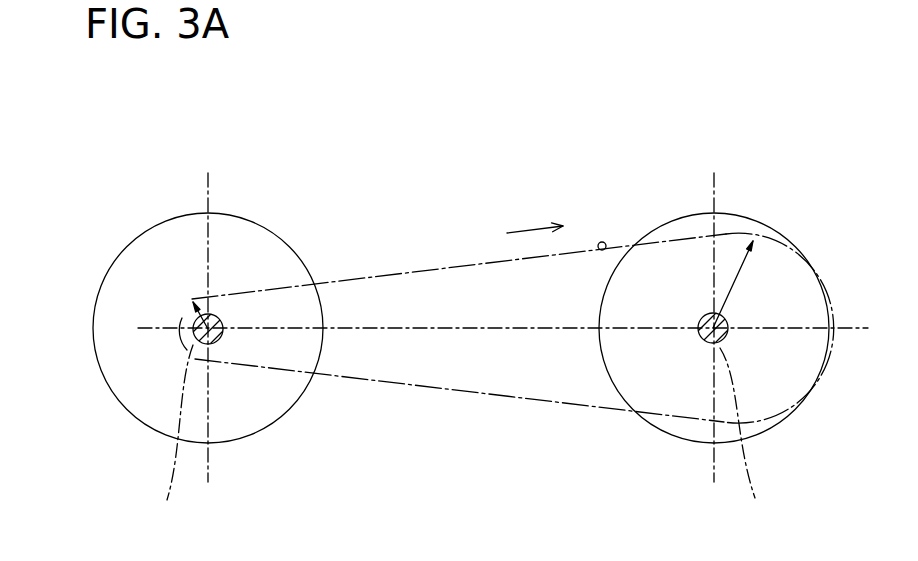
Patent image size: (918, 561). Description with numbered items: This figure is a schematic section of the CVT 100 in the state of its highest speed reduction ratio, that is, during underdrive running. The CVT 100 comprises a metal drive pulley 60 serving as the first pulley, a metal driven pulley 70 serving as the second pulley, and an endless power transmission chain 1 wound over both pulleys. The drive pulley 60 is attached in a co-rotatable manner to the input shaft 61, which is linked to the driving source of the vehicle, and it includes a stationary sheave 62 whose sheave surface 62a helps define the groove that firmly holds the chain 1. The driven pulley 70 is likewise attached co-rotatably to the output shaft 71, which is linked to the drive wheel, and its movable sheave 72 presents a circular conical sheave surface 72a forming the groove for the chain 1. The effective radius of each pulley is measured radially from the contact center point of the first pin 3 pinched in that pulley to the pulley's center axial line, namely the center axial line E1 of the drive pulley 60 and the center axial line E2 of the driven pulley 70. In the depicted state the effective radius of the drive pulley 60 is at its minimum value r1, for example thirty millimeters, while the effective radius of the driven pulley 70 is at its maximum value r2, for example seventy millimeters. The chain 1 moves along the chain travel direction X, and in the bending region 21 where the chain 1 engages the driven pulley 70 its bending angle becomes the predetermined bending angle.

The CVT 100 is at (613, 110).
The endless power transmission chain 1 is at (440, 256).
The chain travel direction X is at (525, 232).
The first pin 3 is at (602, 242).
The bending region 21 is at (726, 233).
The drive pulley 60 is at (163, 223).
The input shaft 61 is at (222, 335).
The stationary sheave 62 is at (247, 217).
The sheave surface 62a is at (262, 253).
The driven pulley 70 is at (778, 230).
The output shaft 71 is at (696, 342).
The movable sheave 72 is at (823, 363).
The sheave surface 72a is at (783, 407).
The minimum value of effective radius r1 is at (193, 302).
The maximum value of effective radius r2 is at (748, 252).
The center axial line of the drive pulley E1 is at (166, 438).
The center axial line of the driven pulley E2 is at (747, 439).